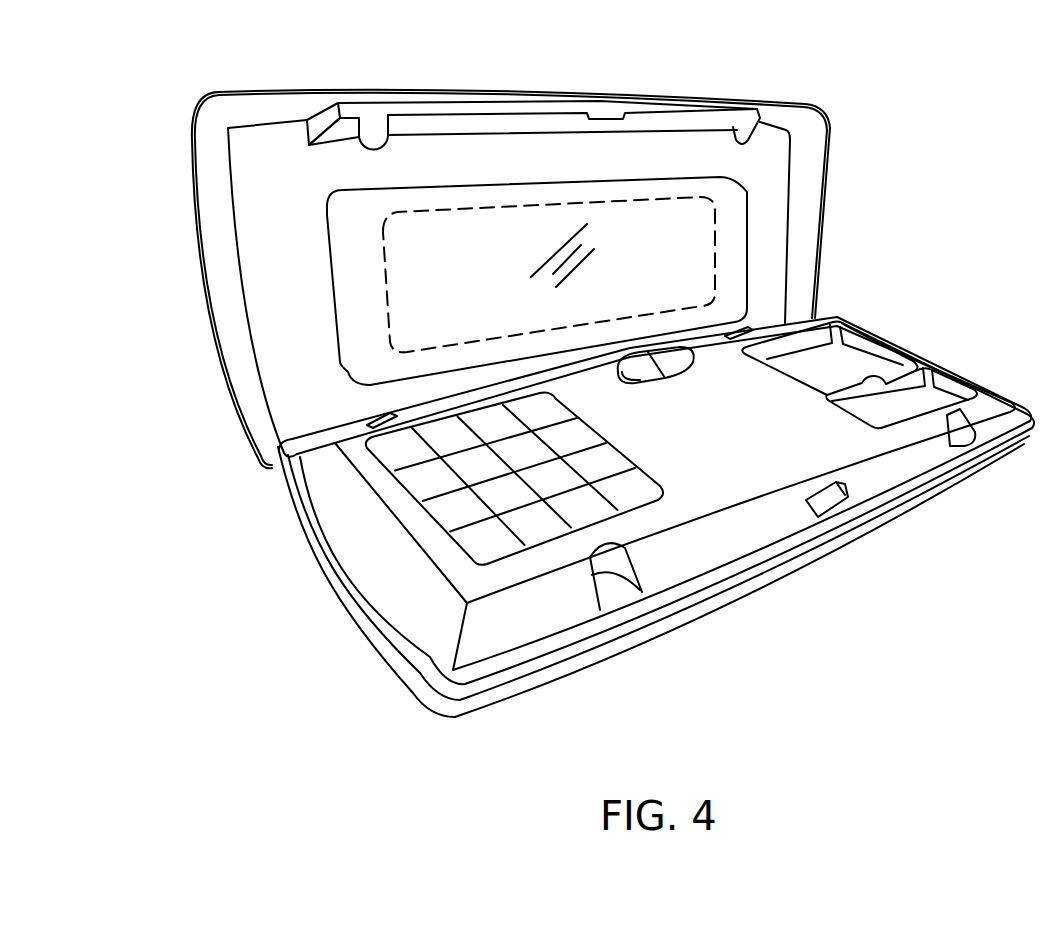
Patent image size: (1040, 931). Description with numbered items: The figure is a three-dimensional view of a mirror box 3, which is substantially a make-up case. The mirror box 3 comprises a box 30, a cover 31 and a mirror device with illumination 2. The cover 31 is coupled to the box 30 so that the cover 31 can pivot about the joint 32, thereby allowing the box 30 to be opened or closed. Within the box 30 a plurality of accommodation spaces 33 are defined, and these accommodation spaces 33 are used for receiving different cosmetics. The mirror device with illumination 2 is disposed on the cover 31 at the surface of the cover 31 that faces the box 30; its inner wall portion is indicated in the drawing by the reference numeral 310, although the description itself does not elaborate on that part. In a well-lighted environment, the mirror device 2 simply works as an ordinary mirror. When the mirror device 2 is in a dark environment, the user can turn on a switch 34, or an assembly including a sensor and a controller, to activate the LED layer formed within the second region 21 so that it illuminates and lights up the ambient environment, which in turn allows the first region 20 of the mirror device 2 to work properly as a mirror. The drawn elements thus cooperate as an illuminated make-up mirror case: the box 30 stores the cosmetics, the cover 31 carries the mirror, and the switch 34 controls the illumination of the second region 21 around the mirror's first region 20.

The mirror box 3 is at (588, 373).
The mirror device with illumination 2 is at (506, 266).
The first region 20 is at (583, 307).
The second region 21 is at (748, 263).
The box 30 is at (626, 517).
The cover 31 is at (240, 397).
The inner wall of lid 310 is at (256, 276).
The joint 32 is at (376, 419).
The accommodation spaces 33 is at (630, 457).
The switch 34 is at (620, 378).